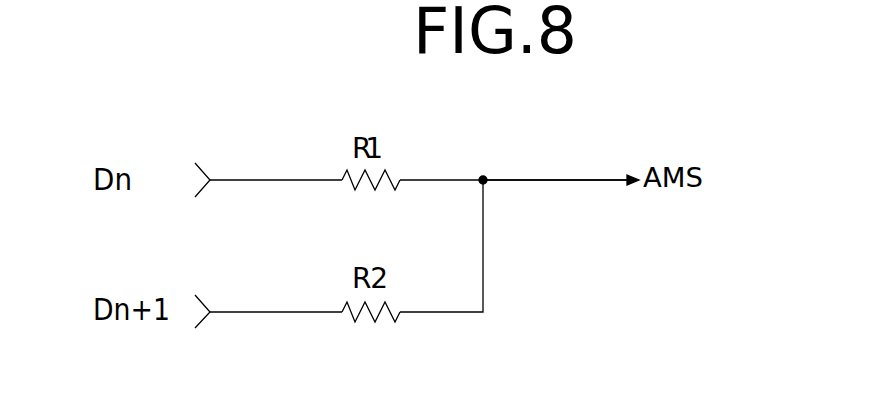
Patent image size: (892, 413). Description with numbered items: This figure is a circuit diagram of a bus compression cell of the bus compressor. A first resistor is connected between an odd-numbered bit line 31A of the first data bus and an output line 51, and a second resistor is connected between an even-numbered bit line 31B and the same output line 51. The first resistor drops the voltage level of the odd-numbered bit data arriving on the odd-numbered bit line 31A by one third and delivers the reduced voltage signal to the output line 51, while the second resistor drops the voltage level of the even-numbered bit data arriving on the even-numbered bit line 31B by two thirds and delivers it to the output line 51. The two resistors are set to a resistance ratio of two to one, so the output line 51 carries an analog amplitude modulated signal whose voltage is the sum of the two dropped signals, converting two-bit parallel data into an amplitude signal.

The odd-numbered bit line 31A is at (262, 180).
The even-numbered bit line 31B is at (252, 312).
The output line 51 is at (572, 180).